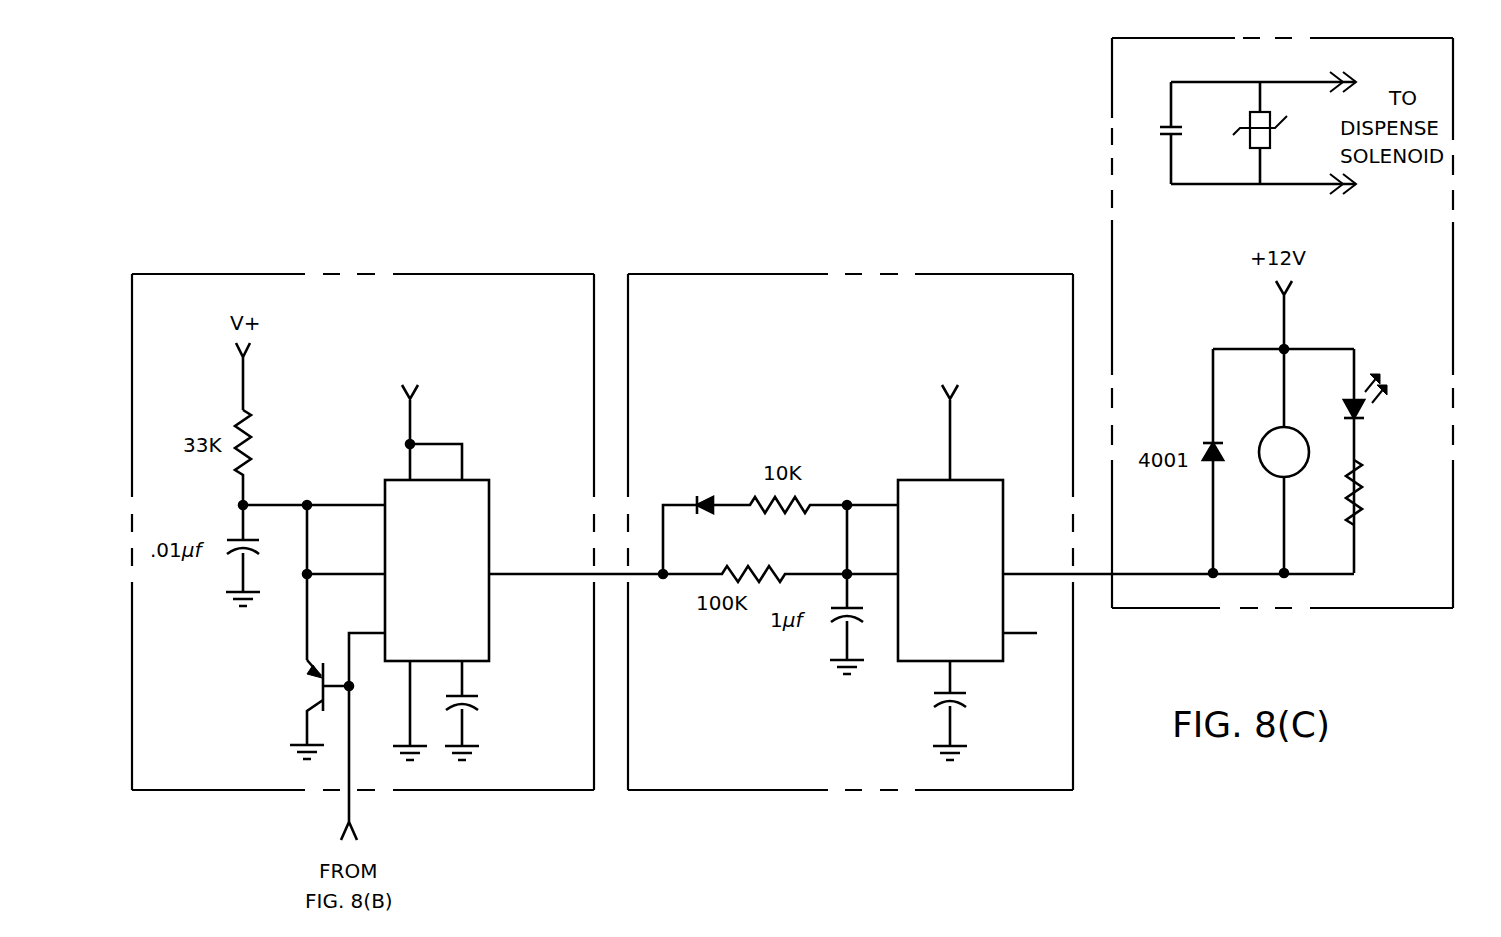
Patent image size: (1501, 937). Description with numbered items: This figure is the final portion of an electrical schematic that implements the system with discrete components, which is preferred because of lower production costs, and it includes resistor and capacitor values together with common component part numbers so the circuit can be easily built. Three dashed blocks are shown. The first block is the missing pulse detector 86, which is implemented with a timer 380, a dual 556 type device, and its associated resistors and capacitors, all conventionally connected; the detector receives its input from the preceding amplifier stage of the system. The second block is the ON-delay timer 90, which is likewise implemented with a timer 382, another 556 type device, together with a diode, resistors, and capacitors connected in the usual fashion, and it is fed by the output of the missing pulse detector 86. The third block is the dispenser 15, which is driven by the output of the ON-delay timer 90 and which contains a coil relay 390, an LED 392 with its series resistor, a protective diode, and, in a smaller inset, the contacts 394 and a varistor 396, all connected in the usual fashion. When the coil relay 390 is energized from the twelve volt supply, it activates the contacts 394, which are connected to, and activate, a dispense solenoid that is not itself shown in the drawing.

The dispenser 15 is at (1453, 297).
The missing pulse detector 86 is at (475, 273).
The ON-delay timer 90 is at (975, 274).
The timer 380 is at (491, 506).
The timer 382 is at (972, 480).
The coil relay 390 is at (1263, 434).
The LED 392 is at (1388, 410).
The contacts 394 is at (1203, 135).
The varistor 396 is at (1270, 137).